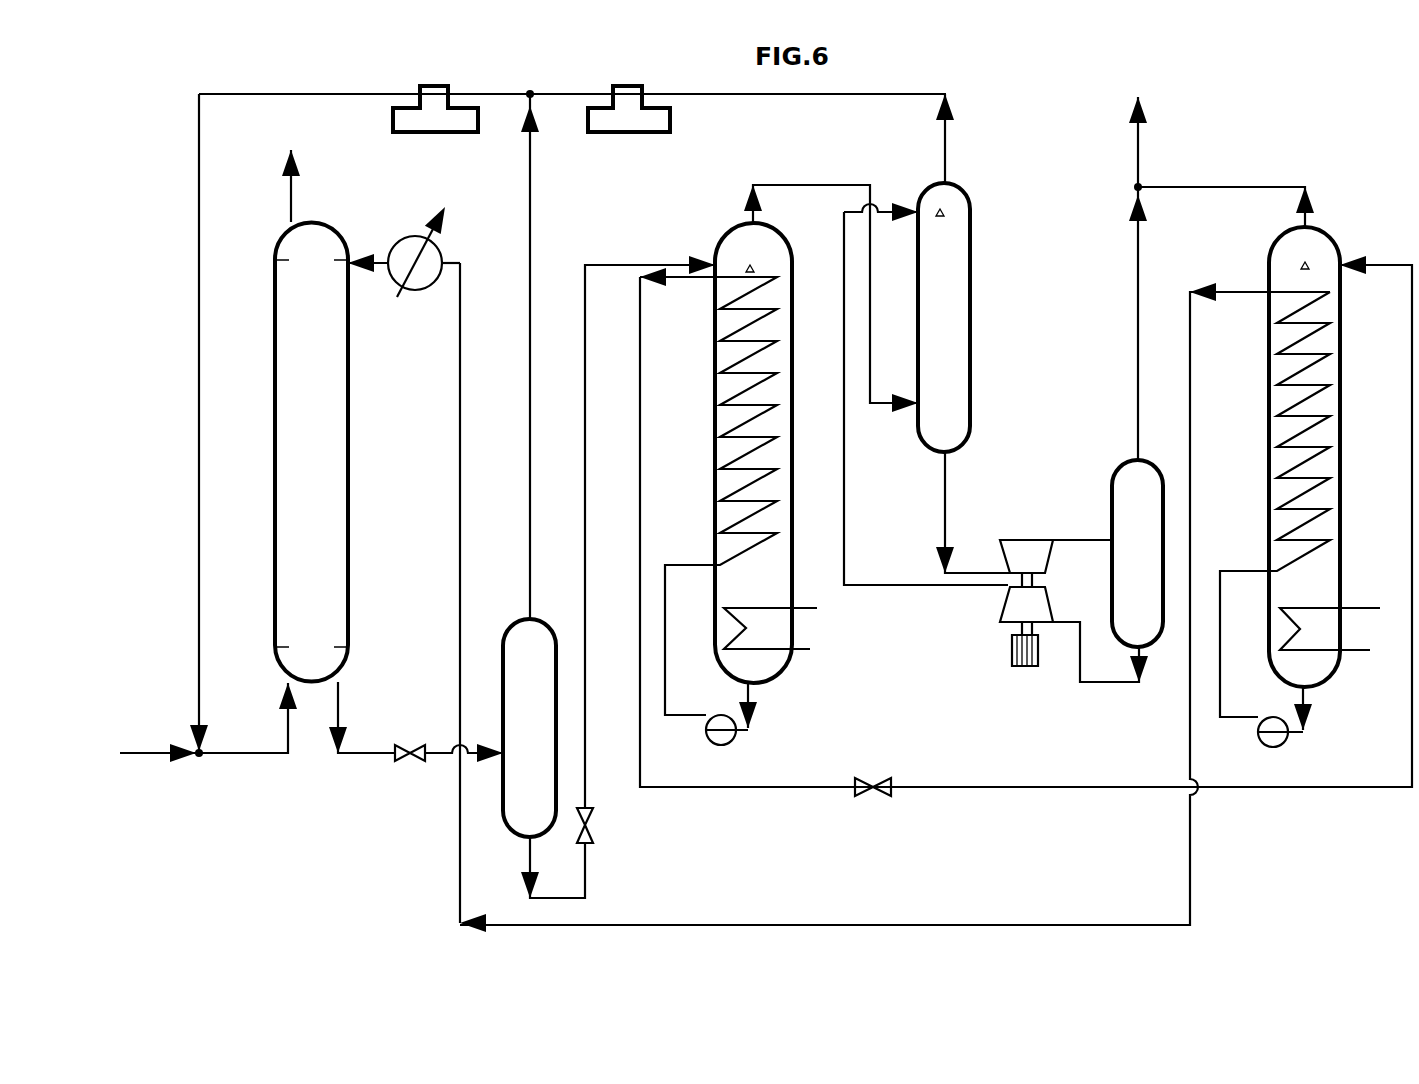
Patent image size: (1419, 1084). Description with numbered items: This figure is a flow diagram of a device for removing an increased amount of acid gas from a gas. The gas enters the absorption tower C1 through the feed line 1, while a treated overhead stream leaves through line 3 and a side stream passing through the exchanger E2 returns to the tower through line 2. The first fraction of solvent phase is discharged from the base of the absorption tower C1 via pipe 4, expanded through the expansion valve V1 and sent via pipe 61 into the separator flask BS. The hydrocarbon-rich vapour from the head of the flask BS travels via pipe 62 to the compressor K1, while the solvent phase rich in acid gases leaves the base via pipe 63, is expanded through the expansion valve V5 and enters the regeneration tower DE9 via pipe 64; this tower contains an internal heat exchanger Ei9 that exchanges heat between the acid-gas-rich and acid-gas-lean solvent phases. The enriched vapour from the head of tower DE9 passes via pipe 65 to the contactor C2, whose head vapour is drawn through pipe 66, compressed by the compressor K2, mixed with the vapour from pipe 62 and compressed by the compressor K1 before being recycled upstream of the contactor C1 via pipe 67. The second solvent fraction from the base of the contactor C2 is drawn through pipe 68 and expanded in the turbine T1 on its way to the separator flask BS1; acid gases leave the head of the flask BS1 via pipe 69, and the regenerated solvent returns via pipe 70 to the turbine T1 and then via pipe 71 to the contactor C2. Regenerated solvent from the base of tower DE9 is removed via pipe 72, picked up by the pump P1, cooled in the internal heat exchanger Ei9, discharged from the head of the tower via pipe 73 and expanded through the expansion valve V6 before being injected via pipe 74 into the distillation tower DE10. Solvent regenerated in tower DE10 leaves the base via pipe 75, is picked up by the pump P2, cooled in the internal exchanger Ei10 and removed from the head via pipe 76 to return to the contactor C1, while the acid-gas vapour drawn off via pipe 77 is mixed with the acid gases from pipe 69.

The feed line 1 is at (128, 756).
The line from exchanger E2 to column C1 2 is at (370, 260).
The overhead outlet line of column C1 3 is at (291, 193).
The pipe 4 is at (345, 757).
The pipe 61 is at (458, 768).
The pipe 62 is at (530, 460).
The pipe 63 is at (585, 872).
The pipe 64 is at (598, 265).
The pipe 65 is at (774, 187).
The pipe 66 is at (948, 137).
The pipe 67 is at (199, 187).
The pipe 68 is at (937, 482).
The pipe 69 is at (1138, 355).
The pipe 70 is at (1085, 686).
The pipe 71 is at (900, 590).
The pipe 72 is at (753, 694).
The pipe 73 is at (640, 456).
The pipe 74 is at (1375, 264).
The pipe 75 is at (1306, 694).
The pipe 76 is at (460, 466).
The pipe 77 is at (1232, 187).
The absorption tower C1 is at (350, 408).
The contactor C2 is at (971, 262).
The heat exchanger E2 is at (424, 252).
The compressor K1 is at (435, 126).
The compressor K2 is at (629, 126).
The separator flask BS is at (503, 625).
The separator flask BS1 is at (1112, 485).
The regeneration tower DE9 is at (717, 386).
The internal heat exchanger Ei9 is at (730, 460).
The distillation tower DE10 is at (1269, 390).
The internal exchanger Ei10 is at (1286, 468).
The turbine T1 is at (1049, 611).
The pump P1 is at (727, 749).
The pump P2 is at (1280, 753).
The expansion valve V1 is at (410, 740).
The expansion valve V5 is at (597, 827).
The expansion valve V6 is at (873, 776).